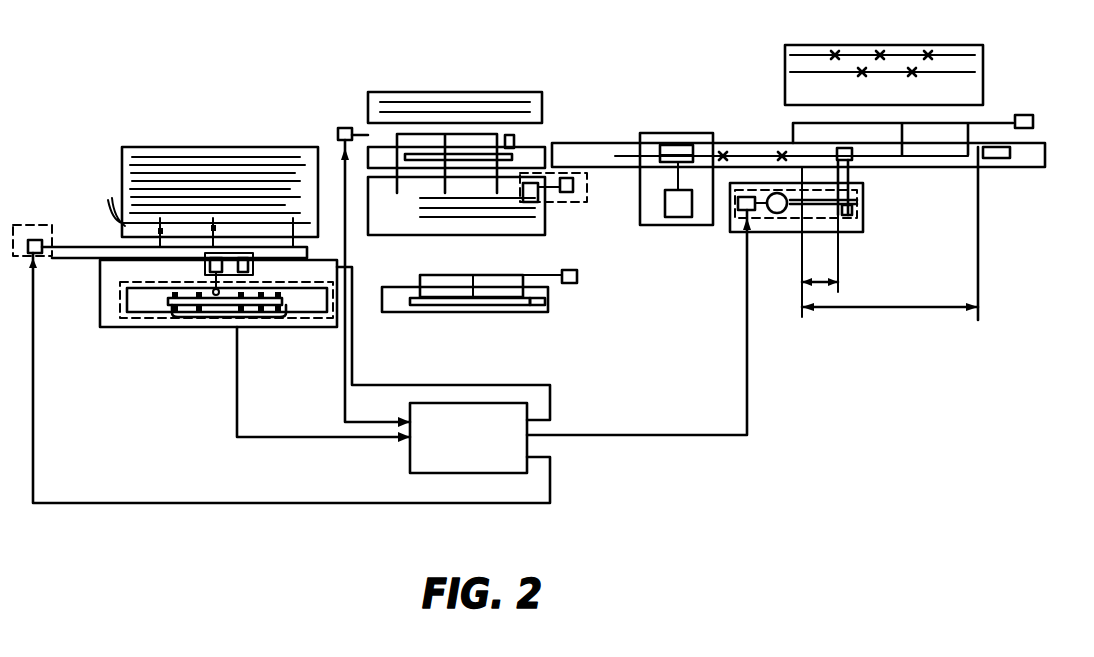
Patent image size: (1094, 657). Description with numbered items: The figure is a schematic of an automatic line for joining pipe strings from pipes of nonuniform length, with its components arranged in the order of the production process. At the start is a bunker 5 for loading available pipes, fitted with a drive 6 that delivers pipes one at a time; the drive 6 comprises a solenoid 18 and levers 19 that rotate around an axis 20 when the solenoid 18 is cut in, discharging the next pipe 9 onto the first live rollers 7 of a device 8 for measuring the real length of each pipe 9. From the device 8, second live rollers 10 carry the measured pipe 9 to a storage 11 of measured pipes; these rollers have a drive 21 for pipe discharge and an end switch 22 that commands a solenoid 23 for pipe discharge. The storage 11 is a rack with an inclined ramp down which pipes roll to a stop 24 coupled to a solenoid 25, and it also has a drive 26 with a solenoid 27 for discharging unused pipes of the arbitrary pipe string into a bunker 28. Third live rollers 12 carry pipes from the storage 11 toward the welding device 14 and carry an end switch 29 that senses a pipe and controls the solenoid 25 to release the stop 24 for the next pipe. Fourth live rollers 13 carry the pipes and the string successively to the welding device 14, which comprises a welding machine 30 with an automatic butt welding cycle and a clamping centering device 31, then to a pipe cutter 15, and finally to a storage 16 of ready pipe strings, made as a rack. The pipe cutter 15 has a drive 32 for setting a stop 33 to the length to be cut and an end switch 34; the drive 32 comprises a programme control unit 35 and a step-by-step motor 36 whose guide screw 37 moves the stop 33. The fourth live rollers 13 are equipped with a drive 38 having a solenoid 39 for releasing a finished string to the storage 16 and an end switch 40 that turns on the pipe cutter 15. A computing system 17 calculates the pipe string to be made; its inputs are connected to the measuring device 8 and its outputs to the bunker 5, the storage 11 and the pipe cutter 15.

The bunker 5 is at (305, 147).
The drive 6 is at (20, 225).
The first live rollers 7 is at (177, 318).
The device for measuring the real length of each pipe 8 is at (107, 328).
The pipe 9 is at (205, 318).
The second live rollers 10 is at (393, 313).
The storage of measured pipes 11 is at (368, 190).
The third live rollers 12 is at (378, 155).
The fourth live rollers 13 is at (765, 143).
The welding device 14 is at (645, 133).
The pipe cutter 15 is at (756, 232).
The storage of ready pipe strings 16 is at (785, 90).
The computing system 17 is at (468, 438).
The solenoid 18 is at (36, 240).
The levers 19 is at (196, 211).
The axis 20 is at (92, 247).
The drive 21 is at (422, 282).
The end switch 22 is at (545, 306).
The solenoid 23 is at (570, 283).
The stop 24 is at (536, 201).
The solenoid 25 is at (573, 189).
The drive 26 is at (410, 137).
The solenoid 27 is at (340, 128).
The bunker 28 is at (530, 97).
The end switch 29 is at (514, 140).
The welding machine 30 is at (678, 217).
The clamping centering device 31 is at (670, 145).
The drive 32 is at (737, 215).
The stop 33 is at (857, 196).
The end switch 34 is at (852, 152).
The programme control unit 35 is at (740, 195).
The step-by-step motor 36 is at (777, 213).
The guide screw 37 is at (835, 218).
The drive 38 is at (978, 130).
The solenoid 39 is at (1033, 121).
The end switch 40 is at (996, 158).